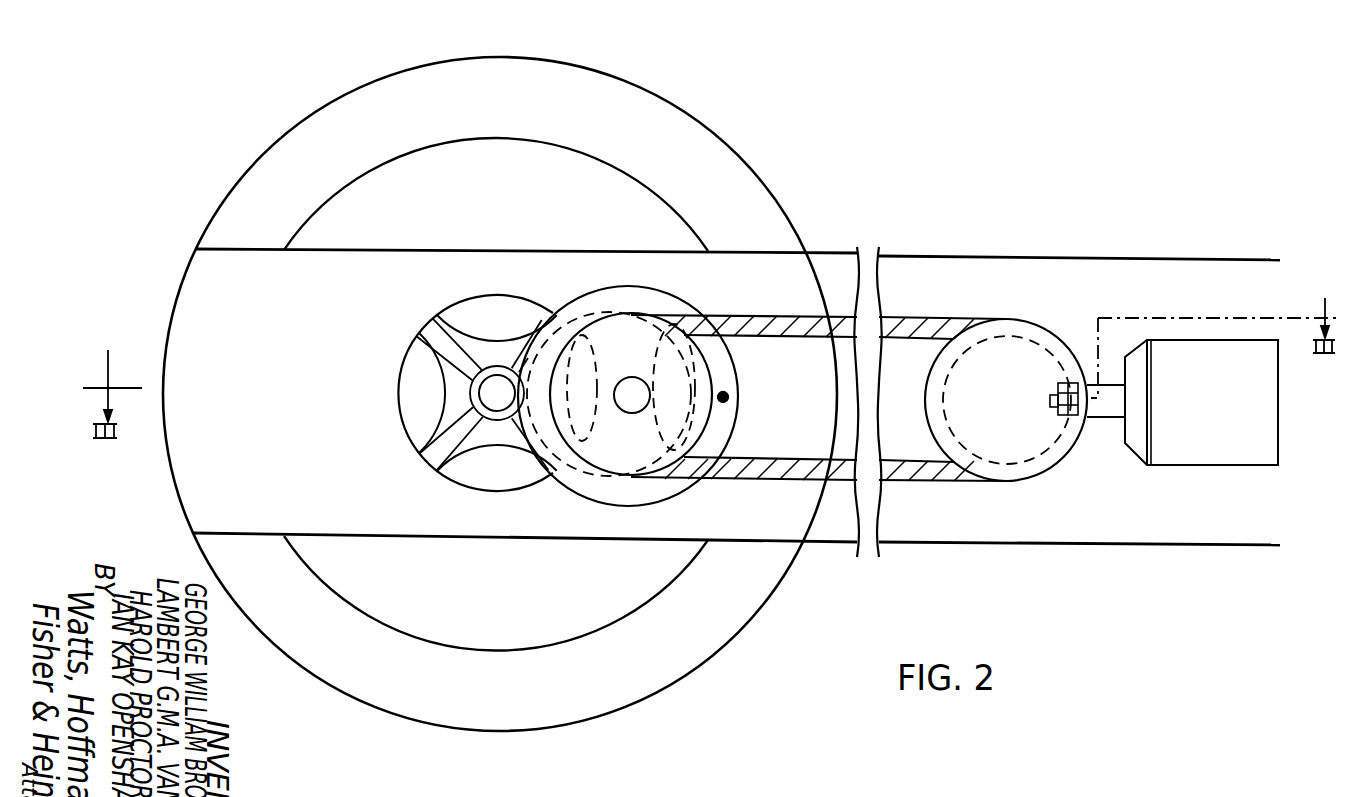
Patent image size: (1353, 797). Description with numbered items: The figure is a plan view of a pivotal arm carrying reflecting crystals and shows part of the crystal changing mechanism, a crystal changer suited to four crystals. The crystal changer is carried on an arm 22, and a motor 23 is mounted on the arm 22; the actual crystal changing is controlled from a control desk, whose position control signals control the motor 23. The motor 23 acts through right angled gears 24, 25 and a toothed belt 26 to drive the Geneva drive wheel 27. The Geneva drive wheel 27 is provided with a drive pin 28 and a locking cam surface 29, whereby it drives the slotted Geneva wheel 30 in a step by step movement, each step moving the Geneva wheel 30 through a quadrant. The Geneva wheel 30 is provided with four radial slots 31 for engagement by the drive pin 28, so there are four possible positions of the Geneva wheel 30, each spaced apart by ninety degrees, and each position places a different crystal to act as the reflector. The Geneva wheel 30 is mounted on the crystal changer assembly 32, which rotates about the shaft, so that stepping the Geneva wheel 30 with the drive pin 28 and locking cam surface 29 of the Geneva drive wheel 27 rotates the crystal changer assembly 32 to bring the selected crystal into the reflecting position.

The arm 22 is at (991, 258).
The motor 23 is at (1182, 466).
The right angled gear 24 is at (1070, 417).
The right angled gear 25 is at (1053, 360).
The toothed belt 26 is at (912, 319).
The Geneva drive wheel 27 is at (710, 317).
The drive pin 28 is at (727, 394).
The locking cam surface 29 is at (583, 345).
The Geneva wheel 30 is at (478, 296).
The radial slot 31 is at (428, 458).
The crystal changer assembly 32 is at (509, 702).